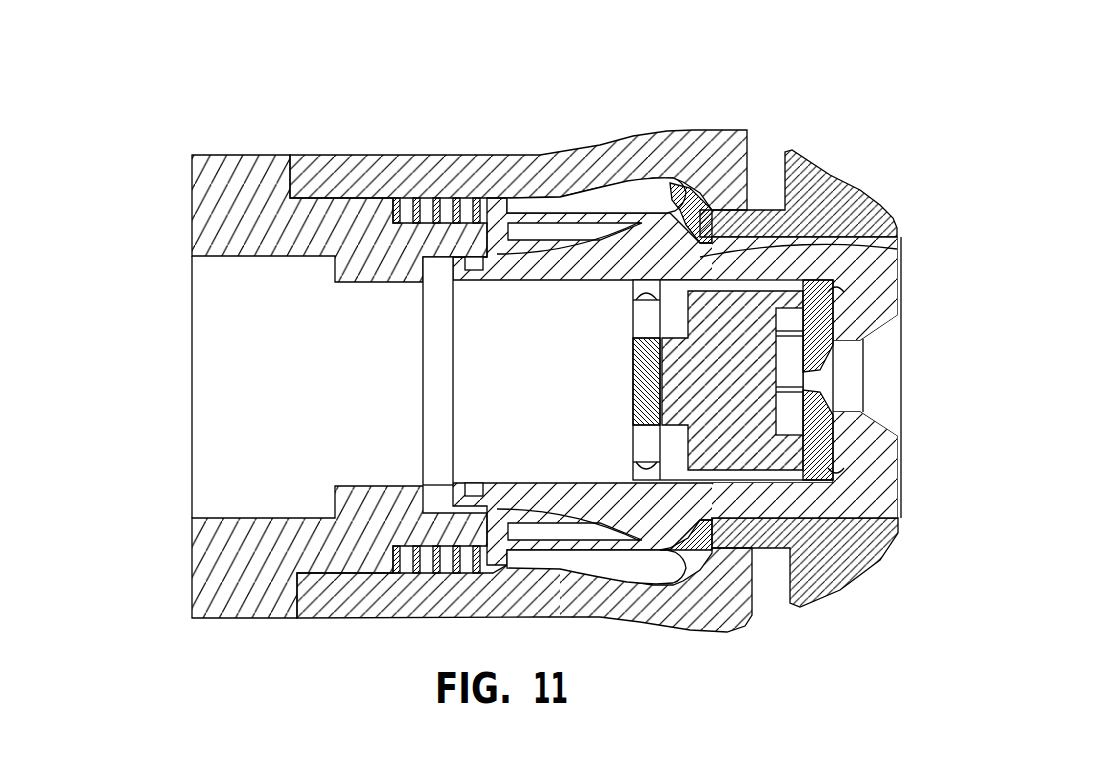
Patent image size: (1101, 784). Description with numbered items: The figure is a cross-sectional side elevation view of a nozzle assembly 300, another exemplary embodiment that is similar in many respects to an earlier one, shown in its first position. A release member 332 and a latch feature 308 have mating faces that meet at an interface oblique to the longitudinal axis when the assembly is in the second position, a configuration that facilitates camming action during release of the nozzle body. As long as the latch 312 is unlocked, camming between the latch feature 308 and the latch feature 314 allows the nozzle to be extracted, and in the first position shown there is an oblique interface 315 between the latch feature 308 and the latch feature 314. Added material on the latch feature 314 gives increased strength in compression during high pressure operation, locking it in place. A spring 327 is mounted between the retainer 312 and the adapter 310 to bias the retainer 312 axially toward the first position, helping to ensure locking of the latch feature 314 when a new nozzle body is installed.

The nozzle assembly 300 is at (638, 330).
The latch feature 308 is at (640, 182).
The adapter 310 is at (236, 155).
The latch 312 is at (493, 200).
The latch feature 314 is at (690, 195).
The oblique interface 315 is at (897, 249).
The spring 327 is at (413, 195).
The release member 332 is at (832, 168).